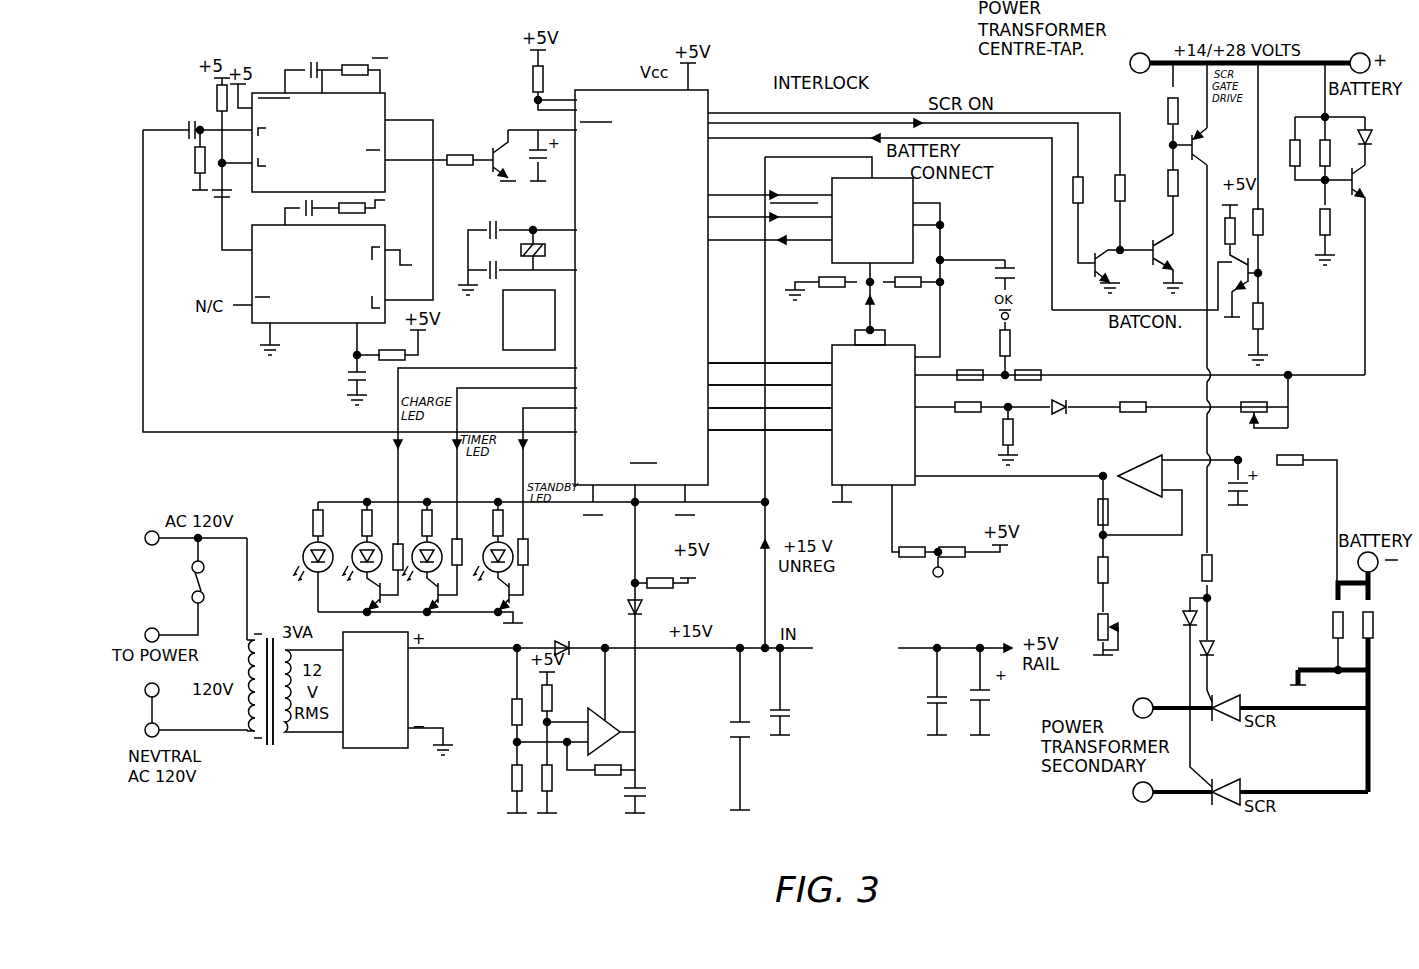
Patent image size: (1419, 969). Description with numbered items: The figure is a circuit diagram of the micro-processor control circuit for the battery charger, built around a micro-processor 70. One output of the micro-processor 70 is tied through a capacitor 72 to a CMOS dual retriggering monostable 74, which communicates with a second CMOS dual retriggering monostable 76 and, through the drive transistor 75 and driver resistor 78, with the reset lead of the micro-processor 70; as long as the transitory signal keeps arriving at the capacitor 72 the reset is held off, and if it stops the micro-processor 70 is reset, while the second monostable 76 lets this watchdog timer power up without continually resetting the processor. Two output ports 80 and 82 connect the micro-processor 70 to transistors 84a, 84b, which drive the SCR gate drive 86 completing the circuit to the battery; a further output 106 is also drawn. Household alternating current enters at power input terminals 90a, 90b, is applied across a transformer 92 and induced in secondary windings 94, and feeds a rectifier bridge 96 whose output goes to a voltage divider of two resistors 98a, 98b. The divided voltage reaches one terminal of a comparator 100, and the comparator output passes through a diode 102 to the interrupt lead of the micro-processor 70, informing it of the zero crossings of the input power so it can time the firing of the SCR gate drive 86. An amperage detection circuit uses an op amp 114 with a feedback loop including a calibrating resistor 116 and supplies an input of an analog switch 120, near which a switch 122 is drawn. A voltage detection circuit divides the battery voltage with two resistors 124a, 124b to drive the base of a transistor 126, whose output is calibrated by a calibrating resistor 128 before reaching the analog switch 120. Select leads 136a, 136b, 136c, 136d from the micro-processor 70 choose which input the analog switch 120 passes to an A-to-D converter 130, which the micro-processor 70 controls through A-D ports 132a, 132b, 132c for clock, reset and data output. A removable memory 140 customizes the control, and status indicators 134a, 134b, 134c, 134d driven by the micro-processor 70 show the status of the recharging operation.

The micro-processor 70 is at (708, 95).
The capacitor 72 is at (184, 127).
The CMOS dual retriggering monostable 74 is at (390, 108).
The transistor 75 is at (498, 133).
The second CMOS dual retriggering monostable 76 is at (310, 323).
The driver resistor 78 is at (466, 163).
The output port 80 is at (700, 113).
The output port 82 is at (700, 125).
The transistor 84a is at (1094, 272).
The transistor 84b is at (1156, 262).
The SCR gate drive 86 is at (1198, 146).
The power input terminal 90a is at (154, 530).
The power input terminal 90b is at (160, 724).
The transformer 92 is at (266, 752).
The secondary windings 94 is at (313, 733).
The rectifier bridge 96 is at (380, 748).
The resistor 98a is at (512, 722).
The resistor 98b is at (512, 779).
The comparator 100 is at (622, 746).
The diode 102 is at (644, 607).
The battery connect output line 106 is at (710, 141).
The op amp 114 is at (1135, 465).
The calibrating resistor 116 is at (1098, 623).
The analog switch 120 is at (915, 468).
The switch 122 is at (944, 572).
The resistor 124a is at (1326, 138).
The resistor 124b is at (1338, 234).
The transistor 126 is at (1368, 192).
The calibrating resistor 128 is at (1286, 409).
The A-to-D converter 130 is at (913, 185).
The A-D port 132a is at (708, 196).
The A-D port 132b is at (708, 217).
The A-D port 132c is at (708, 240).
The status indicator 134a is at (316, 512).
The status indicator 134b is at (376, 512).
The status indicator 134c is at (430, 512).
The status indicator 134d is at (497, 512).
The select lead 136a is at (708, 363).
The select lead 136b is at (708, 385).
The select lead 136c is at (708, 408).
The select lead 136d is at (708, 430).
The removable memory 140 is at (503, 338).